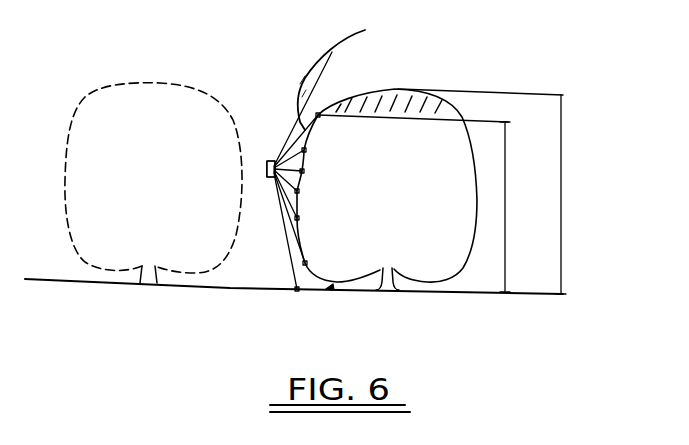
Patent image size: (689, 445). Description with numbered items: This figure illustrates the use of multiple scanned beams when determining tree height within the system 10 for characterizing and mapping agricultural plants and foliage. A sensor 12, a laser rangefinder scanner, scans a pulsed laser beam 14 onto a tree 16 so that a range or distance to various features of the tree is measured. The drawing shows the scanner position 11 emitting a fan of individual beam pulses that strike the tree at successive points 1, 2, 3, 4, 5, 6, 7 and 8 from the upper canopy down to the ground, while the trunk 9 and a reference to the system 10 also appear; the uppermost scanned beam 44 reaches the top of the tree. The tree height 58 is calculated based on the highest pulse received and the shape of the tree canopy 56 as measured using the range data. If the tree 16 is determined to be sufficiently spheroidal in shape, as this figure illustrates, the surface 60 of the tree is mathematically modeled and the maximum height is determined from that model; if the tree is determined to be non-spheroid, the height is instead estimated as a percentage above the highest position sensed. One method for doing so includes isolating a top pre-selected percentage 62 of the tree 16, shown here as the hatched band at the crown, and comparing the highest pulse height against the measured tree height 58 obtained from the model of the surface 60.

The laser scan point 1 is at (303, 109).
The laser scan point 2 is at (297, 136).
The laser scan point 3 is at (294, 156).
The laser scan point 4 is at (293, 171).
The laser scan point 5 is at (291, 183).
The laser scan point 6 is at (291, 196).
The laser scan point 7 is at (295, 218).
The laser scan point 8 is at (286, 232).
The tree trunk 9 is at (389, 287).
The system 10 is at (475, 86).
The laser sensor head 11 is at (265, 176).
The sensor 12 is at (262, 157).
The pulsed laser beam 14 is at (282, 232).
The tree 16 is at (328, 287).
The laser beam scan envelope 44 is at (350, 75).
The tree canopy 56 is at (467, 148).
The tree height 58 is at (563, 167).
The surface of the tree 60 is at (417, 88).
The top pre-selected percentage of the tree 62 is at (388, 97).